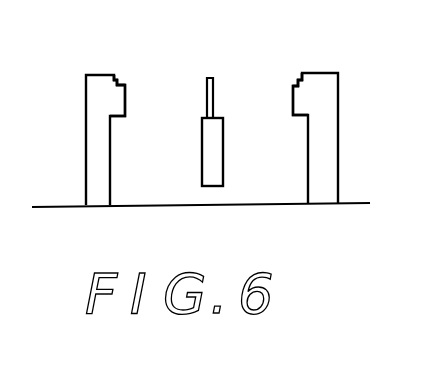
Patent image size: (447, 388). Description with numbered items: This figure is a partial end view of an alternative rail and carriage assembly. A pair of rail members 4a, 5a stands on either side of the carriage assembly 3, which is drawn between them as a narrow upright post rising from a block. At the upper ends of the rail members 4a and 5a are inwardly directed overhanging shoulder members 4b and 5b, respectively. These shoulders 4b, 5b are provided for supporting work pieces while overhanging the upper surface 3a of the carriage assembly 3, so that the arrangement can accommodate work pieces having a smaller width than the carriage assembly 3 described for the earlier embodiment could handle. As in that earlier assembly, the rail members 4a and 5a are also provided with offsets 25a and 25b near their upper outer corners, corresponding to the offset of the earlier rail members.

The carriage assembly 3 is at (216, 75).
The upper surface of the carriage assembly 3a is at (225, 114).
The rail member 4a is at (103, 176).
The overhanging shoulder member 4b is at (116, 108).
The rail member 5a is at (316, 170).
The overhanging shoulder member 5b is at (294, 101).
The offset 25a is at (123, 83).
The offset 25b is at (295, 84).